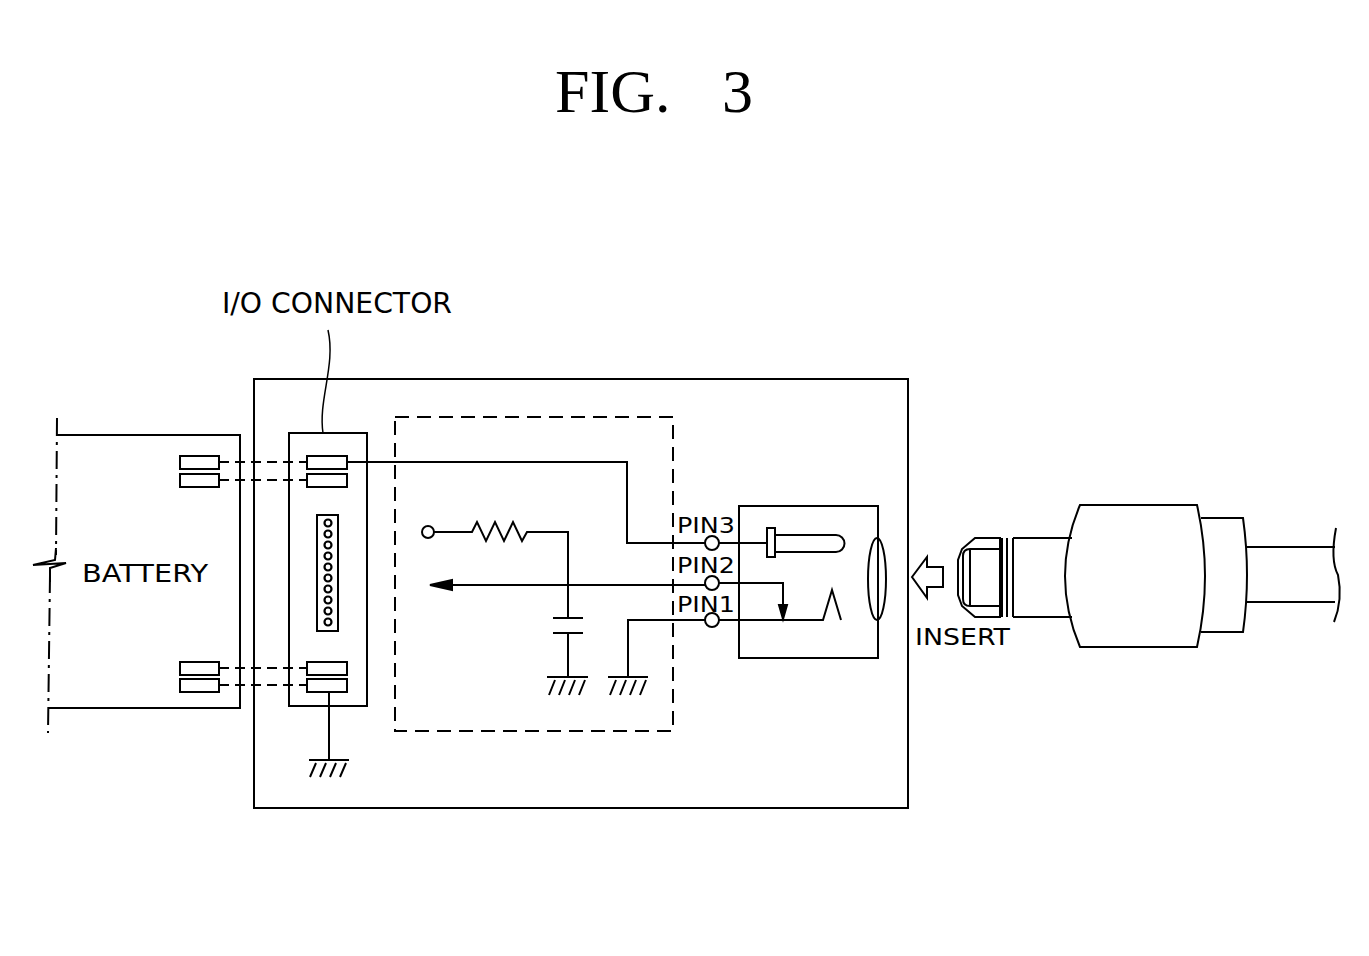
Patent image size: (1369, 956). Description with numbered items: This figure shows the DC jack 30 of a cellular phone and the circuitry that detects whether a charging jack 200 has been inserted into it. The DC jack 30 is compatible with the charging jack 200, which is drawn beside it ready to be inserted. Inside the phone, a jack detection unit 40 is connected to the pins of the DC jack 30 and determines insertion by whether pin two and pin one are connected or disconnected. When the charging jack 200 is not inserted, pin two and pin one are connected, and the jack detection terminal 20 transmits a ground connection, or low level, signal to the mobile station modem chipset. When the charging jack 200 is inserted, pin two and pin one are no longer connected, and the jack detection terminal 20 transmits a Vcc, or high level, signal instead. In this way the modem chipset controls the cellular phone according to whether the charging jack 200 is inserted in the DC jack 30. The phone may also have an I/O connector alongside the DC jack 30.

The jack detection terminal 20 is at (608, 458).
The DC jack 30 is at (807, 505).
The jack detection unit 40 is at (532, 415).
The charging jack 200 is at (1102, 505).